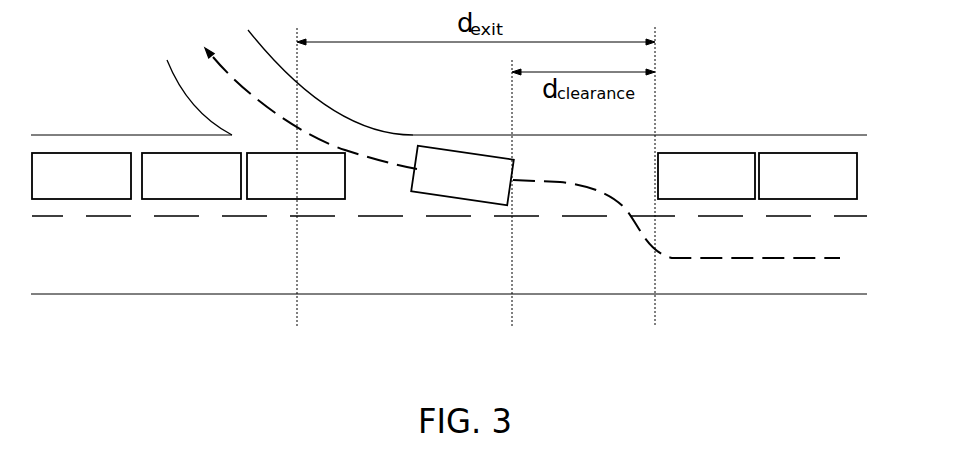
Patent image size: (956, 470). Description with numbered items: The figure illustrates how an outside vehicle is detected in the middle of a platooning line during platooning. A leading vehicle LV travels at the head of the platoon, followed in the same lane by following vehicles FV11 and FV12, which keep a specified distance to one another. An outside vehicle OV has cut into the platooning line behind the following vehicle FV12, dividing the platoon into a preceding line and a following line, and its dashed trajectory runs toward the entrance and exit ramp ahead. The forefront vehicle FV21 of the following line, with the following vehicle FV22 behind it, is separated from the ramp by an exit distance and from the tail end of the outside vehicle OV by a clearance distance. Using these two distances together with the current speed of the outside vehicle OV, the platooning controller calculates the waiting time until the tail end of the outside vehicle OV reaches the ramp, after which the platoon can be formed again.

The leading vehicle LV is at (81, 176).
The following vehicle FV11 is at (191, 176).
The following vehicle FV12 is at (296, 176).
The outside vehicle OV is at (462, 176).
The forefront vehicle of the following line FV21 is at (706, 176).
The following vehicle FV22 is at (808, 176).